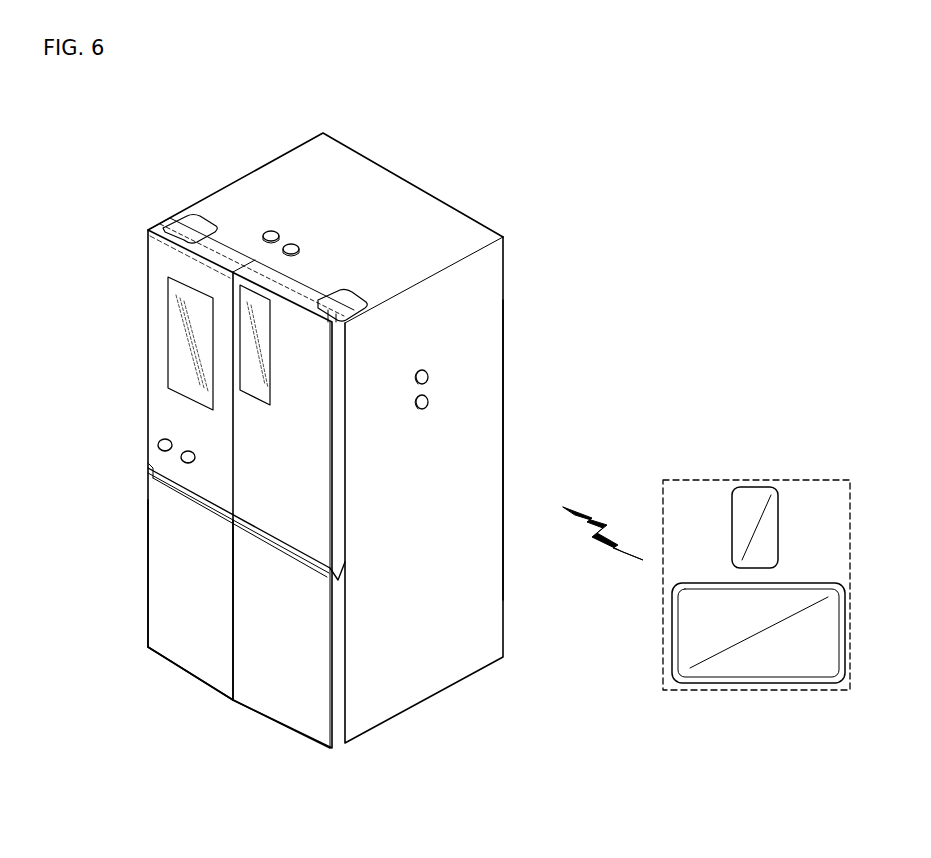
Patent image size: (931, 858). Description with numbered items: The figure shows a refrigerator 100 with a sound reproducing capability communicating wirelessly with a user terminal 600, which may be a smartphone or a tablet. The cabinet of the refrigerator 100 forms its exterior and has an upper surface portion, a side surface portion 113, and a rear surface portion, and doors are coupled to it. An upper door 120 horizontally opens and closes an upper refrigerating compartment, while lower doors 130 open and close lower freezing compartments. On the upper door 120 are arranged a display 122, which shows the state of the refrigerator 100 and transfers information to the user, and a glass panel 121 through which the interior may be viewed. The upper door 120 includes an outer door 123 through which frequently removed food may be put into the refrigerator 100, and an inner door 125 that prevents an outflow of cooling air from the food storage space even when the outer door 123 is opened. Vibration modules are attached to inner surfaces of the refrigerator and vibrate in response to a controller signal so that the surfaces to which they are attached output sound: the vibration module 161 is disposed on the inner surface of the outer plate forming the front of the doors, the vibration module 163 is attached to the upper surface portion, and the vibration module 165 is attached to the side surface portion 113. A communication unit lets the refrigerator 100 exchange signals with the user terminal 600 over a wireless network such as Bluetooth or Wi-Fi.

The refrigerator 100 is at (161, 124).
The side surface portion 113 is at (437, 455).
The upper door 120 is at (98, 238).
The glass panel 121 is at (180, 343).
The display 122 is at (257, 333).
The outer door 123 is at (187, 253).
The inner door 125 is at (160, 230).
The lower doors 130 is at (246, 707).
The vibration module 161 is at (187, 449).
The vibration module 163 is at (275, 232).
The vibration module 165 is at (428, 378).
The user terminal 600 is at (756, 586).